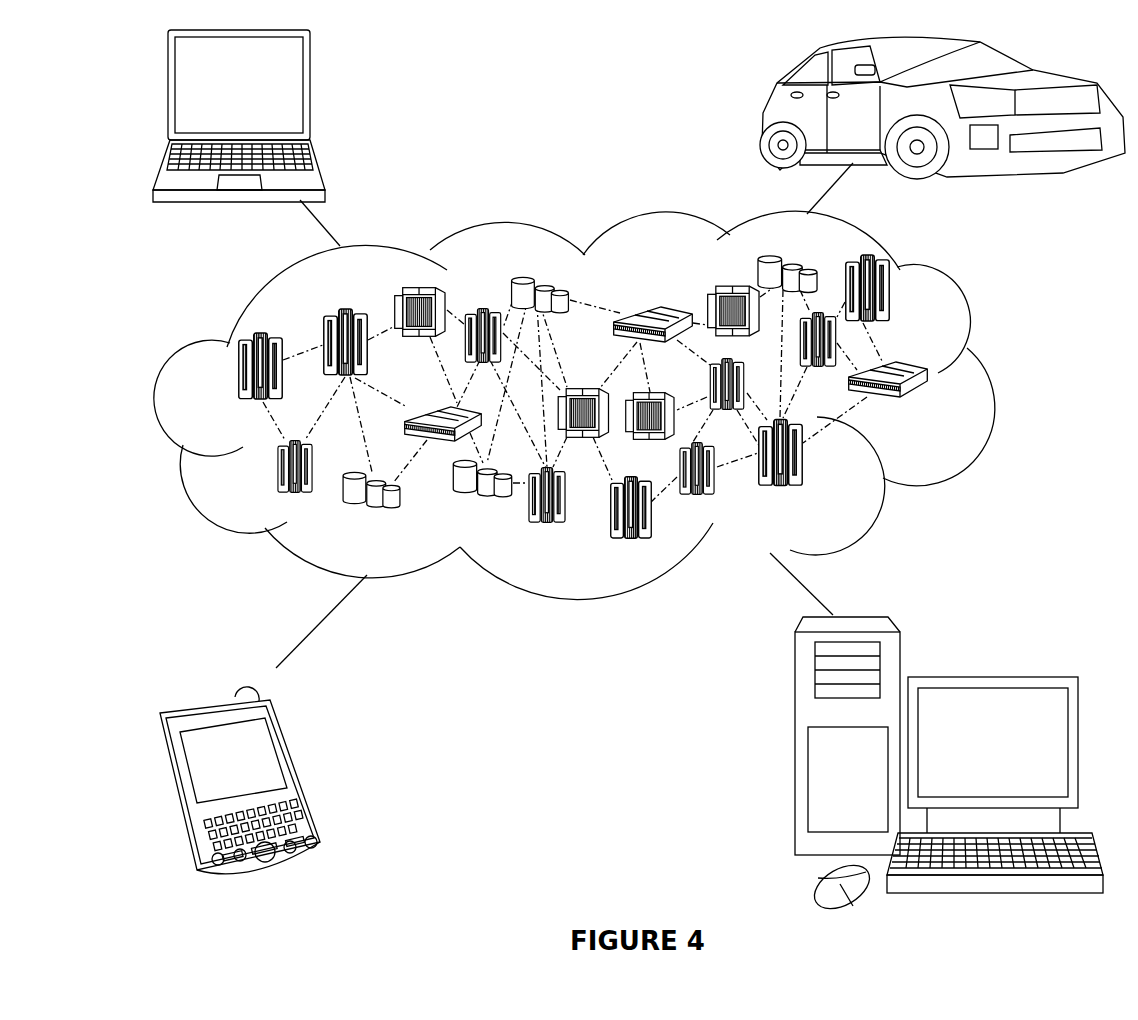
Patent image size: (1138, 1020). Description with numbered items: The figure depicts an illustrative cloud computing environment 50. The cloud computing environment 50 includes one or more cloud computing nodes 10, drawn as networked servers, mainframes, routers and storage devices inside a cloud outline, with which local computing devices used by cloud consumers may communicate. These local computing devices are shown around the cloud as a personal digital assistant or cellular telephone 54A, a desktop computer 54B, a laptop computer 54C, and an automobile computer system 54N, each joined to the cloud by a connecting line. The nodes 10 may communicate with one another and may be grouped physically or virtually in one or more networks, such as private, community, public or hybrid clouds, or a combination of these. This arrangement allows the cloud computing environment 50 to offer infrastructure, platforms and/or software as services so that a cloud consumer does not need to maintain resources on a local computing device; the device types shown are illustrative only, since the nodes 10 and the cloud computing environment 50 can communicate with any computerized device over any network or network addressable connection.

The cloud computing environment 50 is at (990, 378).
The cloud computing node 10 is at (930, 408).
The personal digital assistant or cellular telephone 54A is at (302, 776).
The desktop computer 54B is at (990, 675).
The laptop computer 54C is at (312, 95).
The automobile computer system 54N is at (763, 110).